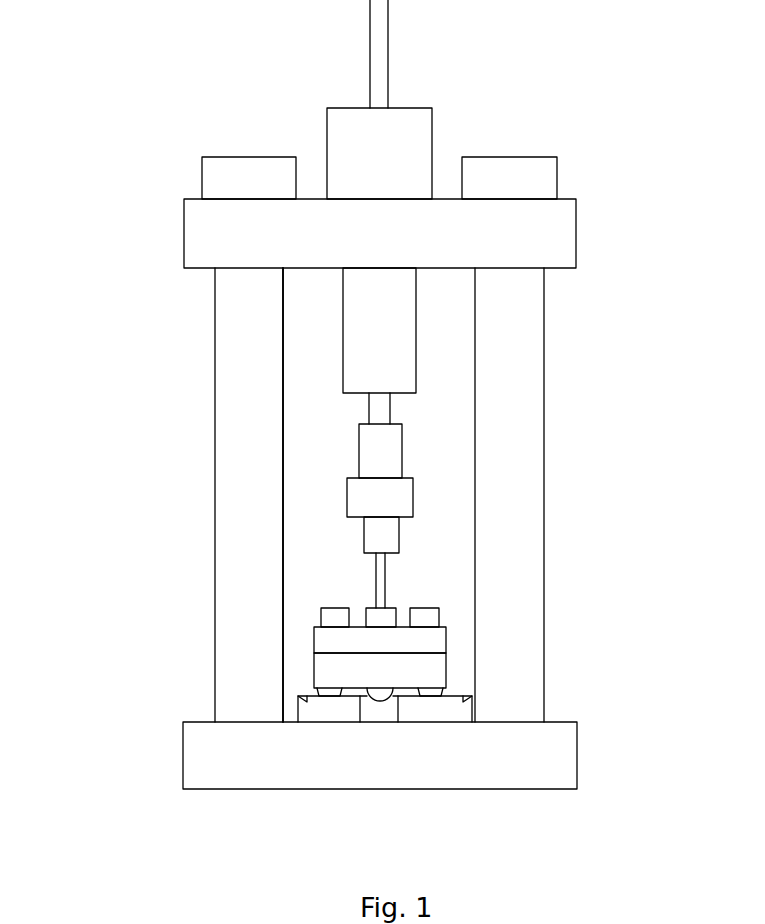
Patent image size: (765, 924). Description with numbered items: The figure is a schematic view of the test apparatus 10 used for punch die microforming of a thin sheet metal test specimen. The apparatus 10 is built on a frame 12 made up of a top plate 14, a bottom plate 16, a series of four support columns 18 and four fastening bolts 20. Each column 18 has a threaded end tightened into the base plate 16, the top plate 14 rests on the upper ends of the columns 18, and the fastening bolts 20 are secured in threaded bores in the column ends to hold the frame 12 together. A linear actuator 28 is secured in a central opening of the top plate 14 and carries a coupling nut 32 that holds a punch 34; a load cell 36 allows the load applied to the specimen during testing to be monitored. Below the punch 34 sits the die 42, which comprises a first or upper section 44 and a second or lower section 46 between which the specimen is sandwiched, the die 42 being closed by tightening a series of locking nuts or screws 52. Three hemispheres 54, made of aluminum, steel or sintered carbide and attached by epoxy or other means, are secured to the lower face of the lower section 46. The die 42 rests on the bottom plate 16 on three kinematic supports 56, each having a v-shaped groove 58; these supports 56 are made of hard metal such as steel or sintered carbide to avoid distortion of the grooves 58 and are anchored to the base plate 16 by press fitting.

The apparatus 10 is at (558, 90).
The frame 12 is at (136, 762).
The top plate 14 is at (572, 226).
The bottom plate 16 is at (570, 750).
The support columns 18 is at (222, 404).
The fastening bolts 20 is at (205, 173).
The linear actuator 28 is at (403, 123).
The coupling nut 32 is at (403, 337).
The punch 34 is at (380, 568).
The load cell 36 is at (358, 496).
The die 42 is at (306, 591).
The first or upper section 44 is at (435, 640).
The second or lower section 46 is at (328, 670).
The locking nuts or screws 52 is at (325, 618).
The hemispheres 54 is at (437, 690).
The kinematic supports 56 is at (307, 712).
The v-shaped groove 58 is at (462, 698).